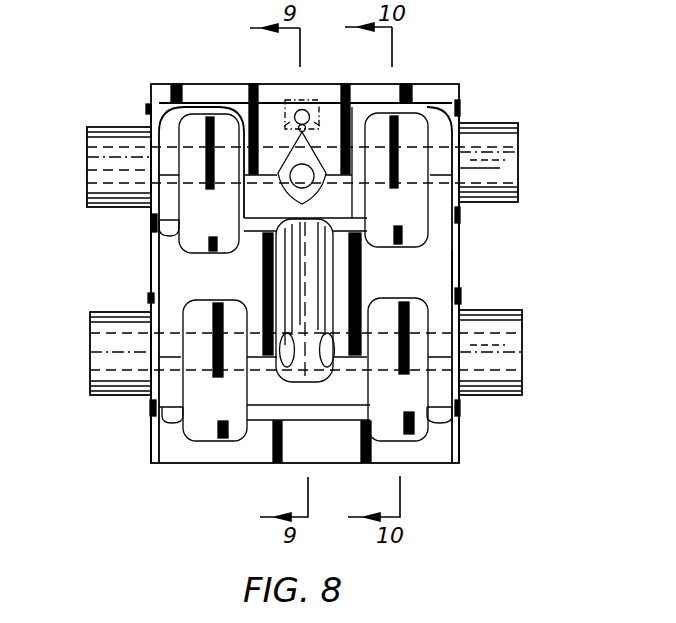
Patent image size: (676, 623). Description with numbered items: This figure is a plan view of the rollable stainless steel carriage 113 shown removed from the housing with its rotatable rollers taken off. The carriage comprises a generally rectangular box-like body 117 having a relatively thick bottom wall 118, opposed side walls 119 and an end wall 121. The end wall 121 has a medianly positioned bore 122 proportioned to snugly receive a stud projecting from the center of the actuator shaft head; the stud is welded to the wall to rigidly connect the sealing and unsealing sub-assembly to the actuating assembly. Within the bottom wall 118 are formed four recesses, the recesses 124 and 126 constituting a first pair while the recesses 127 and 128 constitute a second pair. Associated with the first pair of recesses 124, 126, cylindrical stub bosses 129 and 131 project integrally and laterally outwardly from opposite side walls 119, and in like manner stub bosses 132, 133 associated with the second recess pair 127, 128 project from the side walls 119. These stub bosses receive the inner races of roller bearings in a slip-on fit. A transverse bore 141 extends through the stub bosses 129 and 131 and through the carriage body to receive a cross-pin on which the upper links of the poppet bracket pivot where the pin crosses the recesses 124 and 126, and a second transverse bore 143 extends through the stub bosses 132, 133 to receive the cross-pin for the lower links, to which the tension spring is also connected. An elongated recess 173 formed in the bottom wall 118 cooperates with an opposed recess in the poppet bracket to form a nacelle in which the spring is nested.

The carriage 113 is at (226, 72).
The body 117 is at (459, 275).
The bottom wall 118 is at (412, 282).
The side walls 119 is at (151, 258).
The end wall 121 is at (346, 96).
The bore 122 is at (293, 96).
The recess 124 is at (227, 224).
The recess 126 is at (412, 222).
The recess 127 is at (231, 411).
The recess 128 is at (414, 404).
The stub boss 129 is at (104, 126).
The stub boss 131 is at (503, 123).
The stub boss 132 is at (112, 313).
The stub boss 133 is at (513, 310).
The transverse bore 141 is at (508, 176).
The transverse bore 143 is at (525, 348).
The elongated recess 173 is at (292, 264).